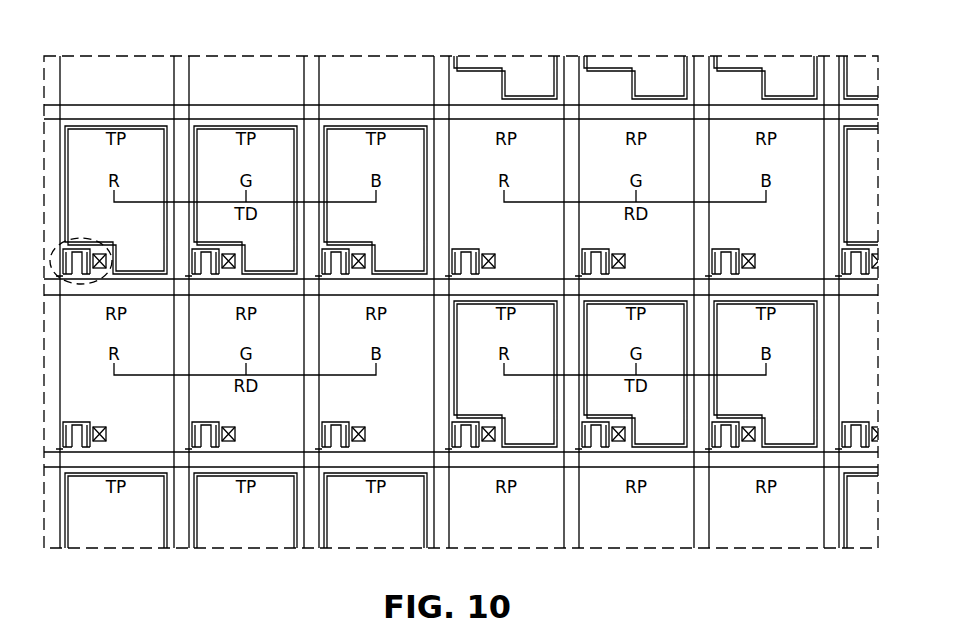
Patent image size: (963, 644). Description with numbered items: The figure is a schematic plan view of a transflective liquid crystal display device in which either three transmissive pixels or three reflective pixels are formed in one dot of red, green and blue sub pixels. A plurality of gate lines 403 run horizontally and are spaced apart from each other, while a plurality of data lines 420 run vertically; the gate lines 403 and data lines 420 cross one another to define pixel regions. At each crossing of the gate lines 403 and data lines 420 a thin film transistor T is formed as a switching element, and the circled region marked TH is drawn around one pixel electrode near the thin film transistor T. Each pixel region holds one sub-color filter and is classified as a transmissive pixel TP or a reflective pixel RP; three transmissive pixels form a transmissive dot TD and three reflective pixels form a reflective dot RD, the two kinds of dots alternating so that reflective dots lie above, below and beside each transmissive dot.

The gate lines 403 is at (148, 108).
The data lines 420 is at (52, 80).
The transmissive pixel electrode (thin film transistor pixel) TH is at (78, 175).
The thin film transistor T is at (50, 262).